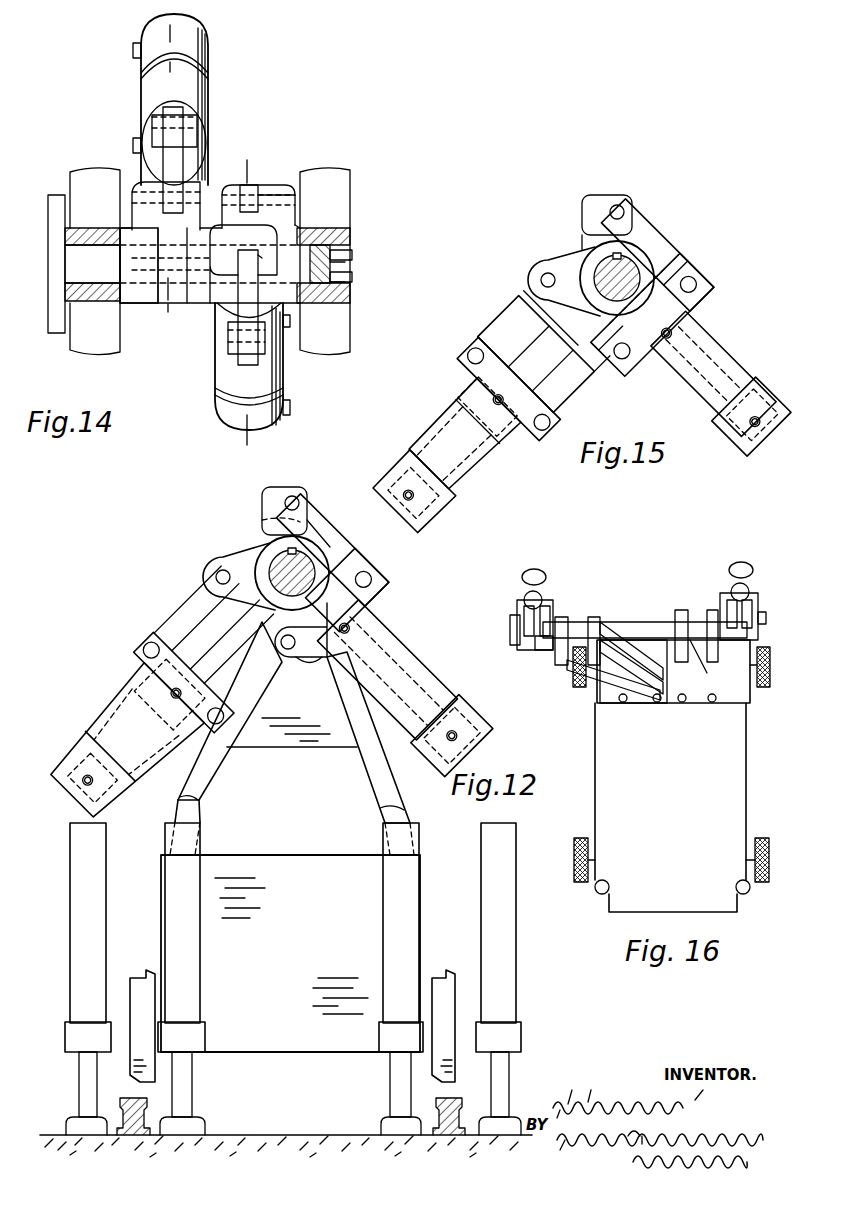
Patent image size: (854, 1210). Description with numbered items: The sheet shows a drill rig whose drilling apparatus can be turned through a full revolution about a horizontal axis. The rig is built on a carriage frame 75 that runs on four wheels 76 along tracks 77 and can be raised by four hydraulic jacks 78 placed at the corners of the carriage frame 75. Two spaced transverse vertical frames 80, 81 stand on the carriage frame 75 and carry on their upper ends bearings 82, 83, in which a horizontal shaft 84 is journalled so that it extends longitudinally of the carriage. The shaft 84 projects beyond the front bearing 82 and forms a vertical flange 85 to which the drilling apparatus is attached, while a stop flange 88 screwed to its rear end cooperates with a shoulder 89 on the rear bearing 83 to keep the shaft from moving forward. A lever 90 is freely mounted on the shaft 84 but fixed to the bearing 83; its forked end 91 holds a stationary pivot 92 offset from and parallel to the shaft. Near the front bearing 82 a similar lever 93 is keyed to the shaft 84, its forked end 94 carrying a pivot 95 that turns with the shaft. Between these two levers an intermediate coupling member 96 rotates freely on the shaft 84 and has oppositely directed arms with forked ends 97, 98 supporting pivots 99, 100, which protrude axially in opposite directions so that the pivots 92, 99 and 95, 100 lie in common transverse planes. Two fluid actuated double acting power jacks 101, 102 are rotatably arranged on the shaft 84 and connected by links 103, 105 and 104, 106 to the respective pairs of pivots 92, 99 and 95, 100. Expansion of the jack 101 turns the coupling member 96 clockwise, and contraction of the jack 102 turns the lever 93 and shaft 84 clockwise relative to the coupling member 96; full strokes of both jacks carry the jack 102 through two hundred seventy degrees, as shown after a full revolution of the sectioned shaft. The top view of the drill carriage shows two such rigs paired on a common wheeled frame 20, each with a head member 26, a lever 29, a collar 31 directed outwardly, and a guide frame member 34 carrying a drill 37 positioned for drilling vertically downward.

In FIG. 16, the frame 20 is at (690, 808).
In FIG. 16, the head member 26 is at (679, 624).
In FIG. 16, the lever 29 is at (550, 660).
In FIG. 16, the collar 31 is at (525, 640).
In FIG. 16, the guide frame member 34 is at (555, 602).
In FIG. 16, the drill 37 is at (540, 570).
In FIG. 12, the carriage frame 75 is at (277, 1032).
In FIG. 12, the wheels 76 is at (142, 1060).
In FIG. 12, the tracks 77 is at (133, 1137).
In FIG. 12, the hydraulic jacks 78 is at (172, 953).
In FIG. 14, the forward transverse vertical frame 80 is at (80, 188).
In FIG. 12, the forward transverse vertical frame 80 is at (398, 812).
In FIG. 14, the rear transverse vertical frame 81 is at (338, 200).
In FIG. 12, the rear transverse vertical frame 81 is at (380, 758).
In FIG. 14, the front bearing 82 is at (82, 292).
In FIG. 14, the rear bearing 83 is at (347, 232).
In FIG. 14, the shaft 84 is at (83, 260).
In FIG. 15, the shaft 84 is at (627, 263).
In FIG. 12, the shaft 84 is at (313, 570).
In FIG. 14, the flange 85 is at (57, 218).
In FIG. 14, the stop flange 88 is at (353, 263).
In FIG. 14, the shoulder 89 is at (350, 300).
In FIG. 14, the lever 90 is at (302, 222).
In FIG. 14, the forked end 91 is at (271, 192).
In FIG. 14, the stationary pivot 92 is at (282, 200).
In FIG. 14, the lever 93 is at (145, 292).
In FIG. 15, the lever 93 is at (577, 258).
In FIG. 12, the lever 93 is at (253, 543).
In FIG. 14, the forked end 94 is at (138, 217).
In FIG. 14, the pivot 95 is at (155, 200).
In FIG. 15, the pivot 95 is at (543, 277).
In FIG. 12, the pivot 95 is at (217, 573).
In FIG. 14, the intermediate coupling member 96 is at (202, 292).
In FIG. 15, the intermediate coupling member 96 is at (583, 235).
In FIG. 12, the intermediate coupling member 96 is at (313, 533).
In FIG. 14, the forked end 97 is at (240, 240).
In FIG. 15, the forked end 97 is at (667, 265).
In FIG. 12, the forked end 97 is at (273, 503).
In FIG. 15, the forked end 98 is at (600, 205).
In FIG. 12, the forked end 98 is at (317, 652).
In FIG. 14, the pivot 99 is at (263, 268).
In FIG. 12, the pivot 99 is at (300, 503).
In FIG. 15, the pivot 100 is at (623, 212).
In FIG. 12, the pivot 100 is at (290, 650).
In FIG. 14, the power jack 101 is at (213, 407).
In FIG. 15, the power jack 101 is at (413, 491).
In FIG. 12, the power jack 101 is at (403, 687).
In FIG. 14, the power jack 102 is at (207, 85).
In FIG. 15, the power jack 102 is at (716, 381).
In FIG. 12, the power jack 102 is at (132, 733).
In FIG. 15, the link 103 is at (602, 364).
In FIG. 12, the link 103 is at (320, 563).
In FIG. 15, the link 104 is at (624, 287).
In FIG. 12, the link 104 is at (247, 678).
In FIG. 15, the link 105 is at (494, 403).
In FIG. 12, the link 105 is at (231, 641).
In FIG. 15, the link 106 is at (528, 341).
In FIG. 12, the link 106 is at (196, 608).